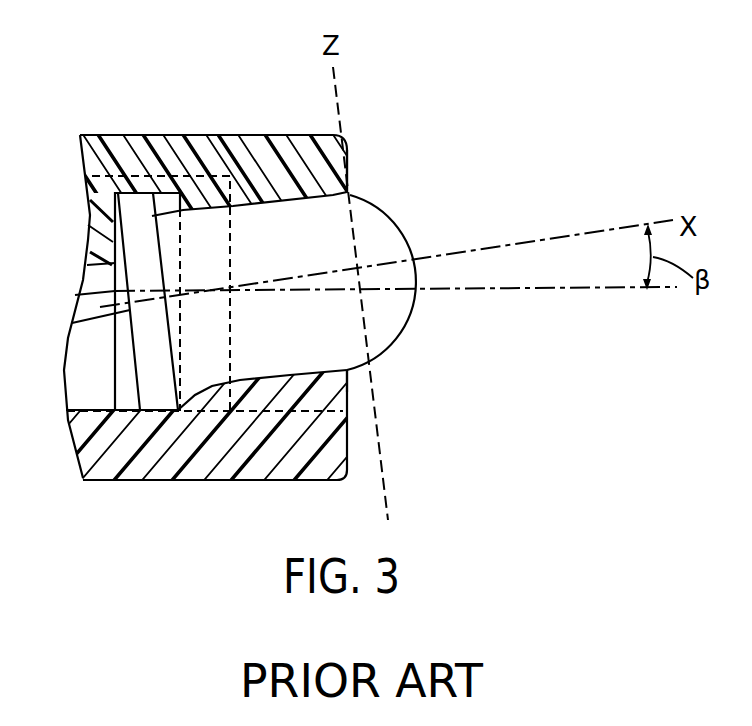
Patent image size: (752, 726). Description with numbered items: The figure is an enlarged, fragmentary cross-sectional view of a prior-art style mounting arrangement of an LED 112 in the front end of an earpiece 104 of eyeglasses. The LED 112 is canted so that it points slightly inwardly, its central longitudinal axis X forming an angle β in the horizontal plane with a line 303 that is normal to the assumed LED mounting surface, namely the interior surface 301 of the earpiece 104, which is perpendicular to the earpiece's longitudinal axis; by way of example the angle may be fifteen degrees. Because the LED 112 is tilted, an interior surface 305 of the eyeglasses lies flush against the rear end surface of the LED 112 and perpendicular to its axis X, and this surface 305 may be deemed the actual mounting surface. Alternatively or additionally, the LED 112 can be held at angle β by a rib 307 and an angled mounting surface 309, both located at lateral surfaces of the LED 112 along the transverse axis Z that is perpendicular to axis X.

The earpiece 104 is at (123, 481).
The interior surface 301 is at (115, 372).
The interior surface 305 is at (140, 377).
The rib 307 is at (351, 372).
The angled mounting surface 309 is at (352, 193).
The LED 112 is at (402, 325).
The line 303 is at (650, 288).